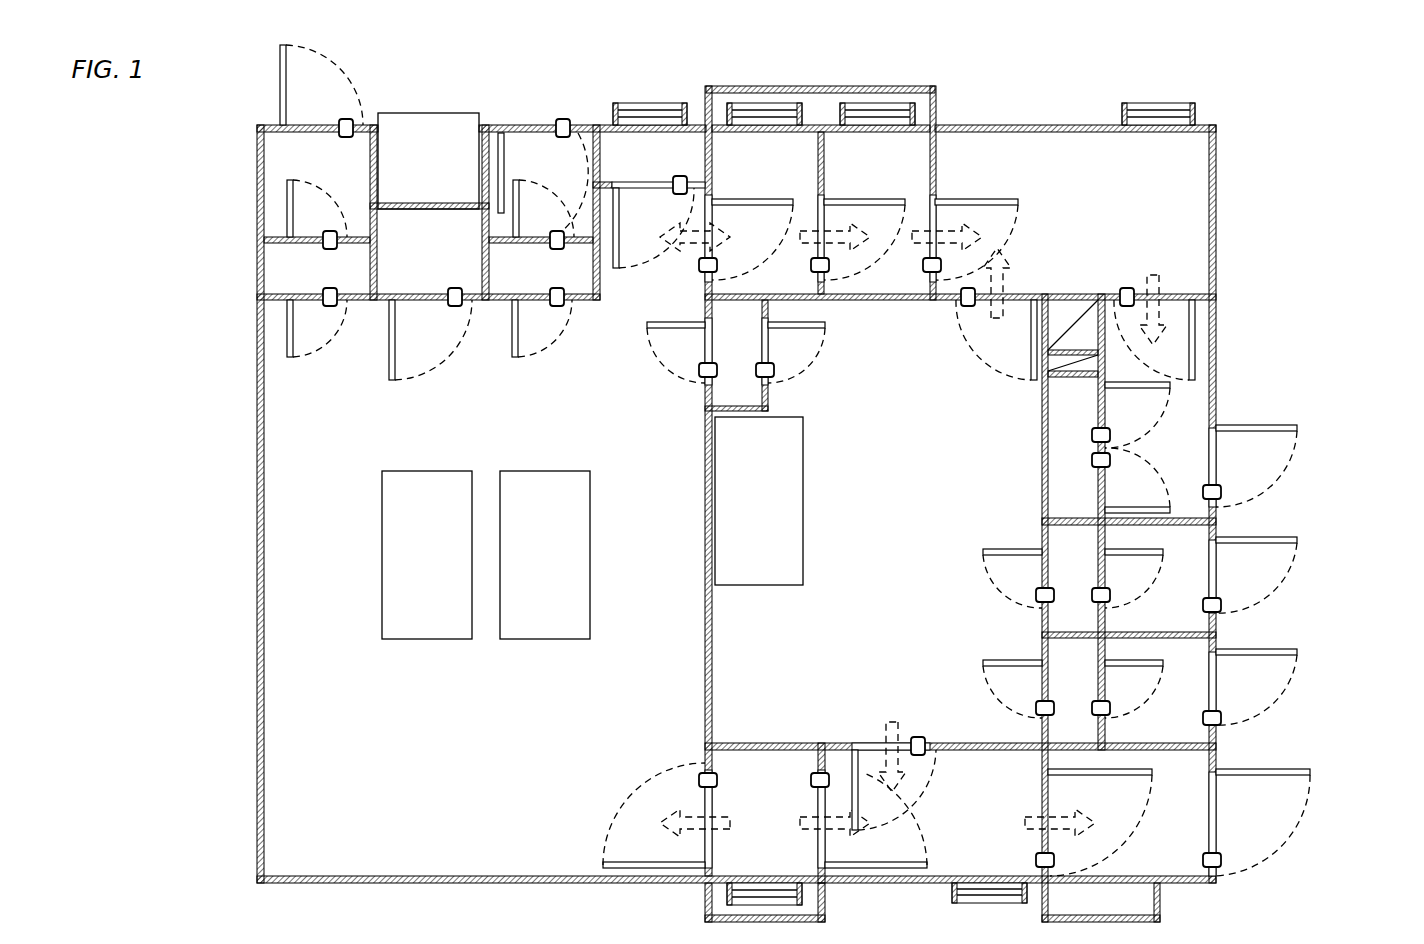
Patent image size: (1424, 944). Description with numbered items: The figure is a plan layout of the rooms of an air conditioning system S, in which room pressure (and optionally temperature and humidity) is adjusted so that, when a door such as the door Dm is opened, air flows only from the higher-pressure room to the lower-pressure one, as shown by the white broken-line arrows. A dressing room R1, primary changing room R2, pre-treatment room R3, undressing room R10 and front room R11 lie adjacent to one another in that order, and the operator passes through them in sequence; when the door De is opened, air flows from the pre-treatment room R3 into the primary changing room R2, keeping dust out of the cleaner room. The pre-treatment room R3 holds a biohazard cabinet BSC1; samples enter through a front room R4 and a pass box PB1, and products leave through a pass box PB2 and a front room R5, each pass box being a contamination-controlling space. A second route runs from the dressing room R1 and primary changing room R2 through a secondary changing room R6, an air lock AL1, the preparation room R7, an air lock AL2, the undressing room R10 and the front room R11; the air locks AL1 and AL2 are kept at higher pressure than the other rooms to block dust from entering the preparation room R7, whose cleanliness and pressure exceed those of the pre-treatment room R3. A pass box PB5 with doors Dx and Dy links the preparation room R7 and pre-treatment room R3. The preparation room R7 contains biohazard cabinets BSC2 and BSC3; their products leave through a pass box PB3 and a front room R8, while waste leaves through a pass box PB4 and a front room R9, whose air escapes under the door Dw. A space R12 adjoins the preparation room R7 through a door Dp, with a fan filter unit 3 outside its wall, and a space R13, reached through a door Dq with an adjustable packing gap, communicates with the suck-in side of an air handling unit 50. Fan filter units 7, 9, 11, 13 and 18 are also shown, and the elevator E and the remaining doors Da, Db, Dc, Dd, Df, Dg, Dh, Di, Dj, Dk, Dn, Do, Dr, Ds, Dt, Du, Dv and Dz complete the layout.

The air conditioning system S is at (1326, 117).
The fan filter unit 3 is at (626, 88).
The fan filter unit 7 is at (728, 902).
The fan filter unit 9 is at (806, 112).
The fan filter unit 11 is at (918, 112).
The fan filter unit 13 is at (1182, 100).
The fan filter unit 18 is at (966, 913).
The air handling unit 50 is at (407, 104).
The dressing room R1 is at (1155, 458).
The primary changing room R2 is at (1073, 218).
The pre-treatment room R3 is at (895, 505).
The front room R4 is at (1155, 616).
The front room R5 is at (1155, 728).
The secondary changing room R6 is at (878, 171).
The preparation room R7 is at (460, 726).
The front room R8 is at (523, 173).
The front room R9 is at (293, 173).
The undressing room R10 is at (963, 793).
The front room R11 is at (1135, 863).
The space R12 is at (623, 171).
The space R13 is at (403, 265).
The air lock AL1 is at (761, 171).
The air lock AL2 is at (746, 813).
The pass box PB1 is at (1049, 571).
The pass box PB2 is at (1049, 683).
The pass box PB3 is at (524, 281).
The pass box PB4 is at (294, 281).
The pass box PB5 is at (713, 351).
The biohazard cabinet BSC1 is at (721, 525).
The biohazard cabinet BSC2 is at (387, 576).
The biohazard cabinet BSC3 is at (506, 576).
The elevator E is at (1052, 463).
The door Da is at (1247, 425).
The door Db is at (1142, 391).
The door Dc is at (1142, 508).
The door Dd is at (1188, 296).
The door De is at (1033, 364).
The door Df is at (988, 548).
The door Dg is at (1154, 548).
The door Dh is at (1260, 536).
The door Di is at (988, 660).
The door Dj is at (1154, 660).
The door Dk is at (1260, 646).
The door Dm is at (981, 196).
The door Dn is at (833, 196).
The door Do is at (721, 196).
The door Dp is at (616, 270).
The door Dq is at (390, 380).
The door Dr is at (511, 358).
The door Ds is at (519, 200).
The door Dt is at (505, 172).
The door Du is at (288, 358).
The door Dv is at (286, 197).
The door Dw is at (280, 78).
The door Dx is at (650, 326).
The door Dy is at (826, 318).
The door Dz is at (608, 863).